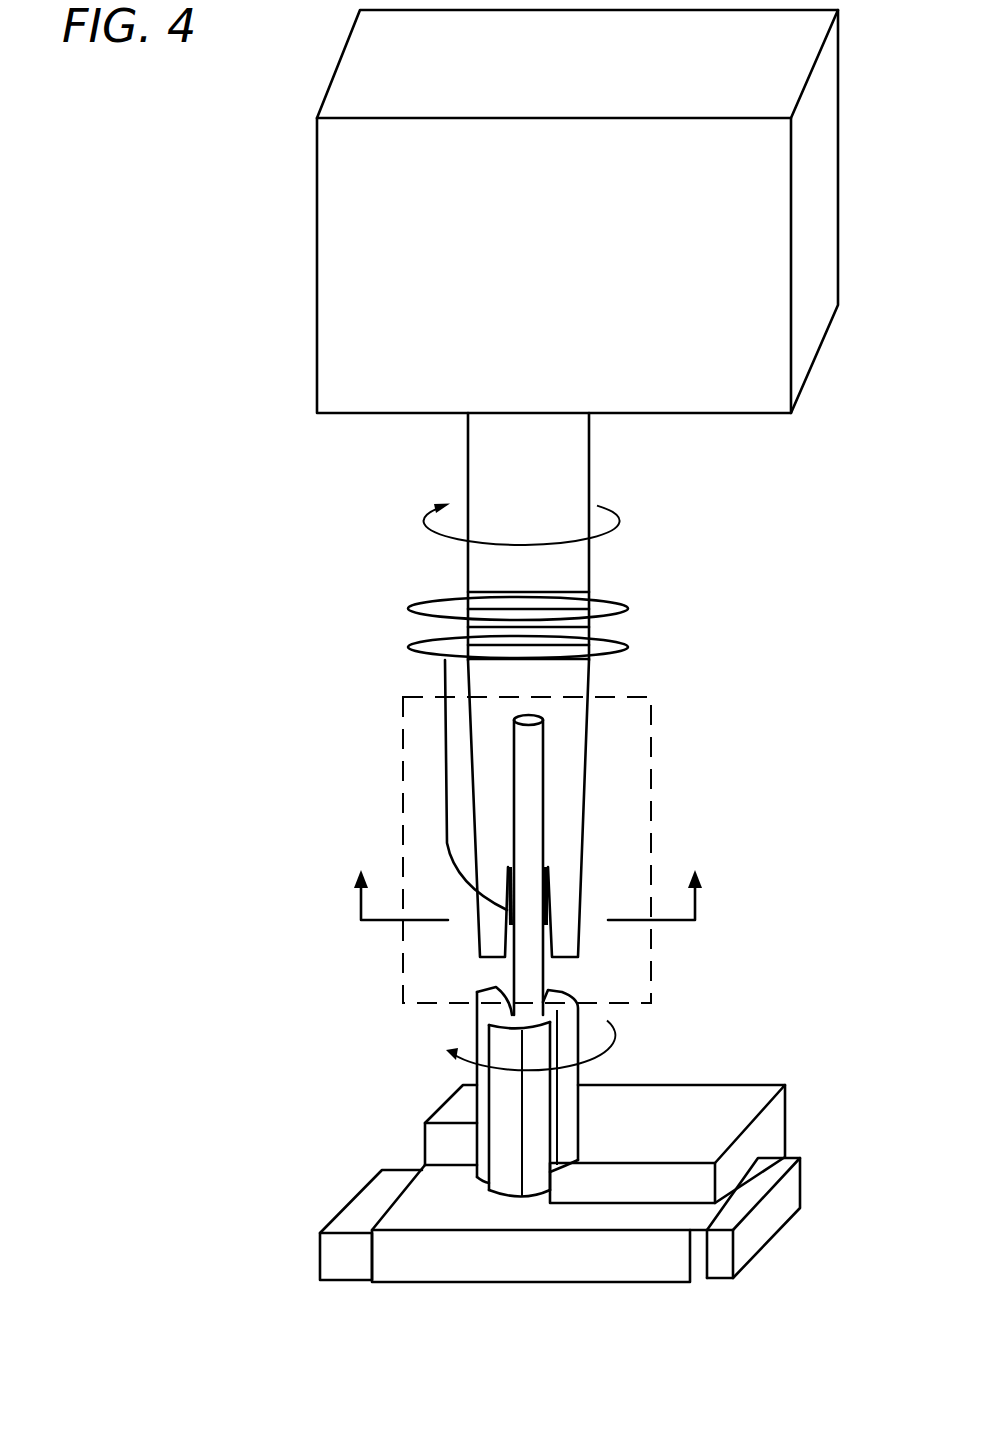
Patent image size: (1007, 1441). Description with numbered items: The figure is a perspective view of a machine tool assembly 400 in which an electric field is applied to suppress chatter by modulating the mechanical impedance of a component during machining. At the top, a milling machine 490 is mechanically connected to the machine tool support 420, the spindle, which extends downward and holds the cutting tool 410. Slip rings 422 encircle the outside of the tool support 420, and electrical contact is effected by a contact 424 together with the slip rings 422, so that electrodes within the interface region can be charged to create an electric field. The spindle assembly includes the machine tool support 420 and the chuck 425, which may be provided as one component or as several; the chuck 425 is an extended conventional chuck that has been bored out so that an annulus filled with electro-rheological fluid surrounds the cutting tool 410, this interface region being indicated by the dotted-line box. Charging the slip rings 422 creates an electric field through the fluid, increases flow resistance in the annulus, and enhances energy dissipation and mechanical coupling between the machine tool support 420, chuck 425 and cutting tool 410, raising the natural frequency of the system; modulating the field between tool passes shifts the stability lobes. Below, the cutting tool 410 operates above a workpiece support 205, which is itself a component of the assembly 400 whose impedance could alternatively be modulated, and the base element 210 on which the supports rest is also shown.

The machine tool assembly 400 is at (166, 579).
The milling machine 490 is at (421, 210).
The machine tool support 420 is at (533, 483).
The slip rings 422 is at (410, 611).
The contact 424 is at (447, 753).
The chuck 425 is at (560, 792).
The cutting tool 410 is at (528, 965).
The base plate 210 is at (442, 1203).
The workpiece support 205 is at (318, 1250).